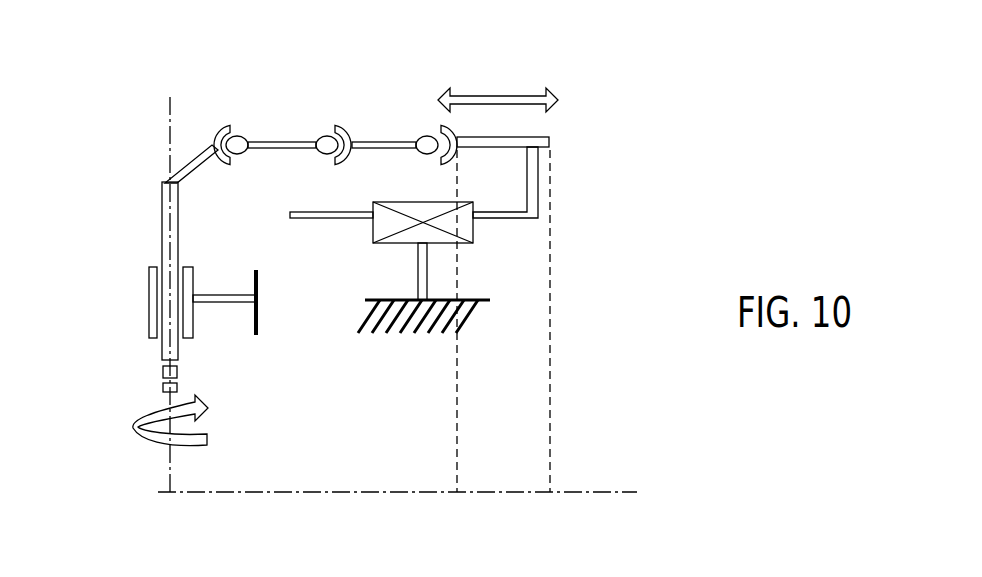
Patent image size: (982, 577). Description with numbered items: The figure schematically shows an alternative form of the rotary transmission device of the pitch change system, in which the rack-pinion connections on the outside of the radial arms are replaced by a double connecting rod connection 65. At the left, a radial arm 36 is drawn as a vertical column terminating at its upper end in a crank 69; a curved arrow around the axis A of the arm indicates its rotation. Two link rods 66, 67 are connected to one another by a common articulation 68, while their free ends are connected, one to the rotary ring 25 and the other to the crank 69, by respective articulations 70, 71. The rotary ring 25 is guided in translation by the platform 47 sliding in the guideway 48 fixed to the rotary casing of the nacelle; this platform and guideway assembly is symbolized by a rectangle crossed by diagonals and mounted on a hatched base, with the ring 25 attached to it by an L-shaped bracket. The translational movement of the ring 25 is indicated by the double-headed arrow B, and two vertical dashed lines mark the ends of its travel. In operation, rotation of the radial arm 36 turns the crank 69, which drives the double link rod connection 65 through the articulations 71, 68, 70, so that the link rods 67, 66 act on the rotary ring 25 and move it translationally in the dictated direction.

The rotary ring 25 is at (538, 142).
The radial arm 36 is at (167, 250).
The platform 47 is at (465, 267).
The guideway 48 is at (477, 233).
The double connecting rod connection 65 is at (304, 119).
The link rod 66 is at (387, 152).
The link rod 67 is at (268, 150).
The common articulation 68 is at (328, 137).
The crank 69 is at (193, 160).
The articulation 70 is at (425, 134).
The articulation 71 is at (235, 137).
The rotation axis A is at (605, 492).
The double-headed arrow B is at (505, 92).